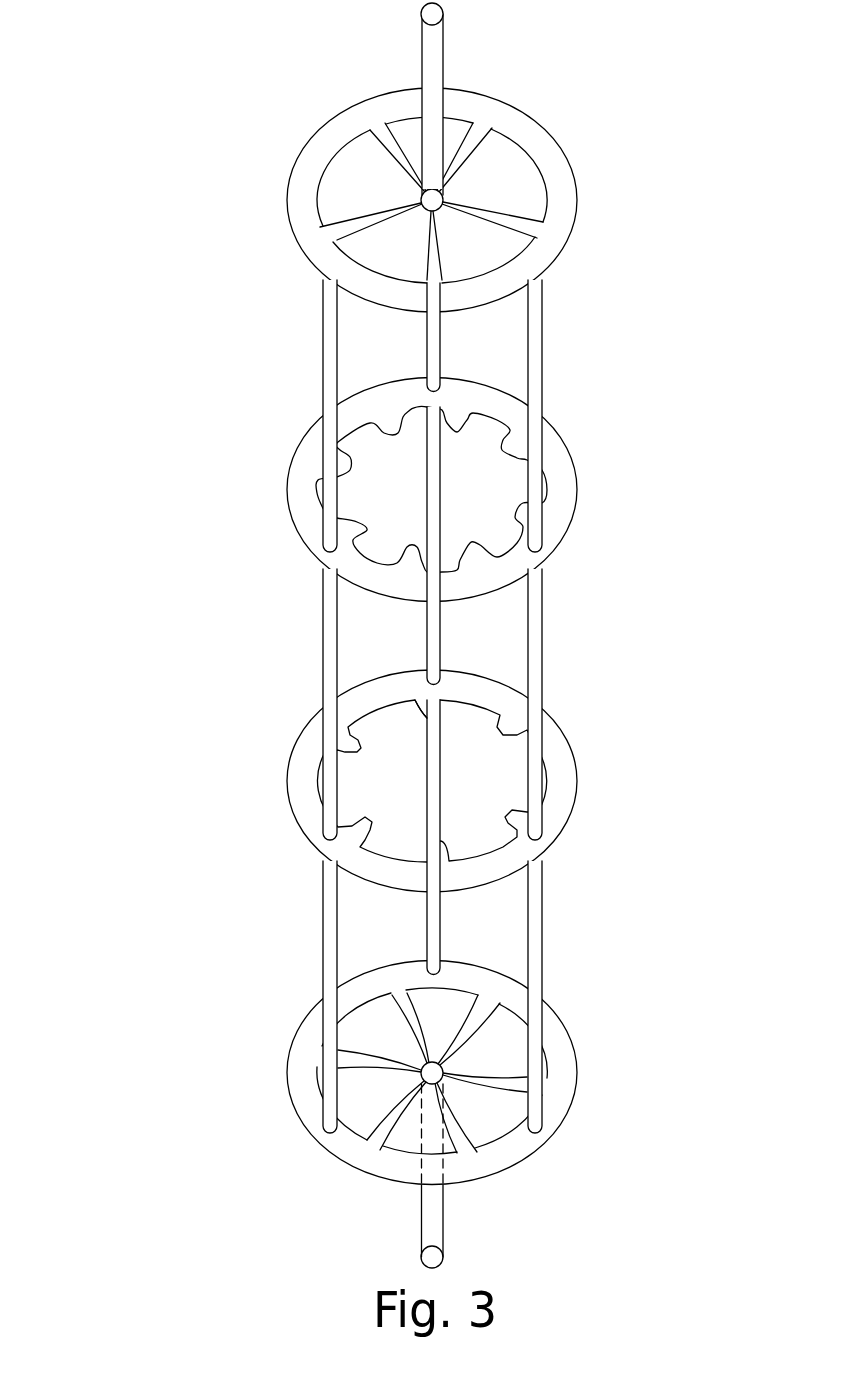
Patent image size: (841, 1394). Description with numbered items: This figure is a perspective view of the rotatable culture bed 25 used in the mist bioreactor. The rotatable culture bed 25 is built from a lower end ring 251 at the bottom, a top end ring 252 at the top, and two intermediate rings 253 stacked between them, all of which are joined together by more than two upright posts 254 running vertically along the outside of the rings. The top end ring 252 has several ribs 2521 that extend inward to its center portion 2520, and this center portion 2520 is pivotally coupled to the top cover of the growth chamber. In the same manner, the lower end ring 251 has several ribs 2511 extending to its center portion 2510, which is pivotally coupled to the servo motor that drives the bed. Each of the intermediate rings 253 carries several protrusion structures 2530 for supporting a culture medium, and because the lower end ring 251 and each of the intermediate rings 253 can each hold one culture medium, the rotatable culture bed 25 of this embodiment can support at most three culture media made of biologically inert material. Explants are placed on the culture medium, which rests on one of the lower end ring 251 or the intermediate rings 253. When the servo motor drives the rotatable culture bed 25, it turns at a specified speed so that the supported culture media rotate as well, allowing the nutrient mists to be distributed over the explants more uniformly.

The rotatable culture bed 25 is at (93, 73).
The lower end ring 251 is at (442, 1106).
The center portion 2510 is at (500, 1003).
The ribs 2511 is at (377, 1142).
The top end ring 252 is at (427, 169).
The center portion 2520 is at (424, 193).
The ribs 2521 is at (478, 132).
The intermediate rings 253 is at (435, 641).
The protrusion structures 2530 is at (517, 447).
The upright posts 254 is at (332, 703).